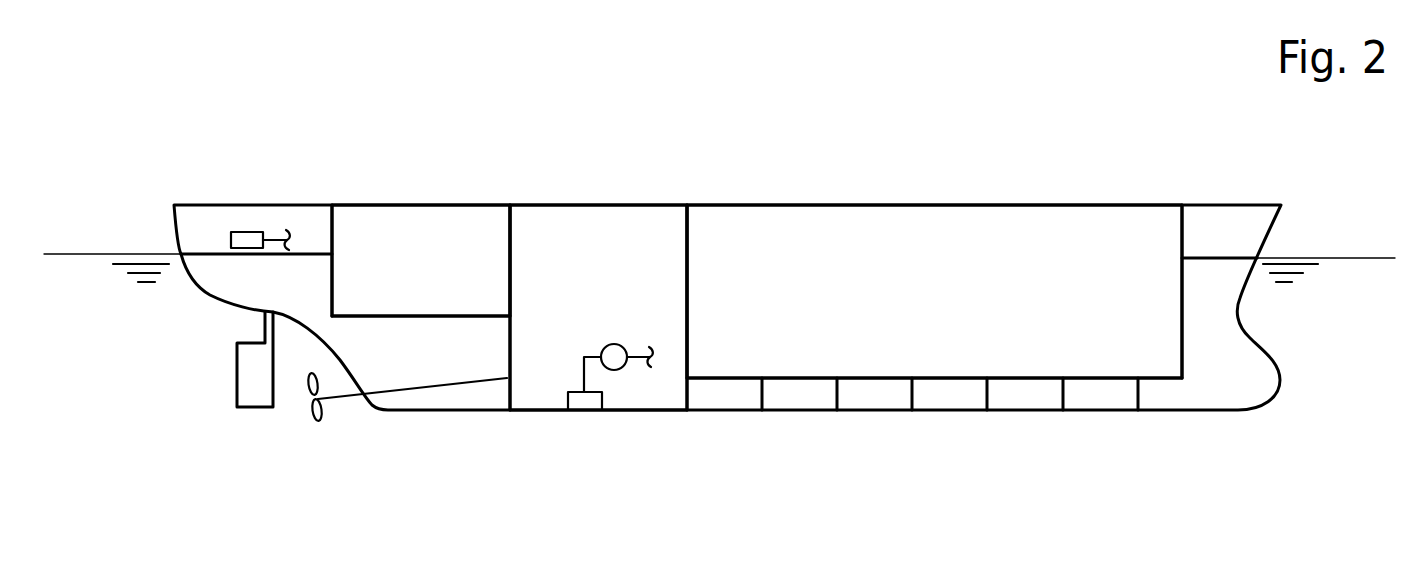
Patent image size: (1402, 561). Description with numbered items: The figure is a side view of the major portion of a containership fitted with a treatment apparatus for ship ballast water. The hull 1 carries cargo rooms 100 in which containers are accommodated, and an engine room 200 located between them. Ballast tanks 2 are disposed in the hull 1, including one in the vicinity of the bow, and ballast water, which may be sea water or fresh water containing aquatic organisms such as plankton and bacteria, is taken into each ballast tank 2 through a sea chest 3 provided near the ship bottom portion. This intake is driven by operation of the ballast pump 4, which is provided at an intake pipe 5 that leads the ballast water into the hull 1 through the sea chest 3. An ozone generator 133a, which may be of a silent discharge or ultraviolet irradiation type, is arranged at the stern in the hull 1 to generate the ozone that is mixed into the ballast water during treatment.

The hull 1 is at (723, 339).
The ballast tank 2 is at (212, 285).
The sea chest 3 is at (567, 400).
The ballast pump 4 is at (630, 345).
The intake pipe 5 is at (580, 366).
The cargo room 100 is at (402, 277).
The engine room 200 is at (580, 277).
The ozone generator 133a is at (248, 232).